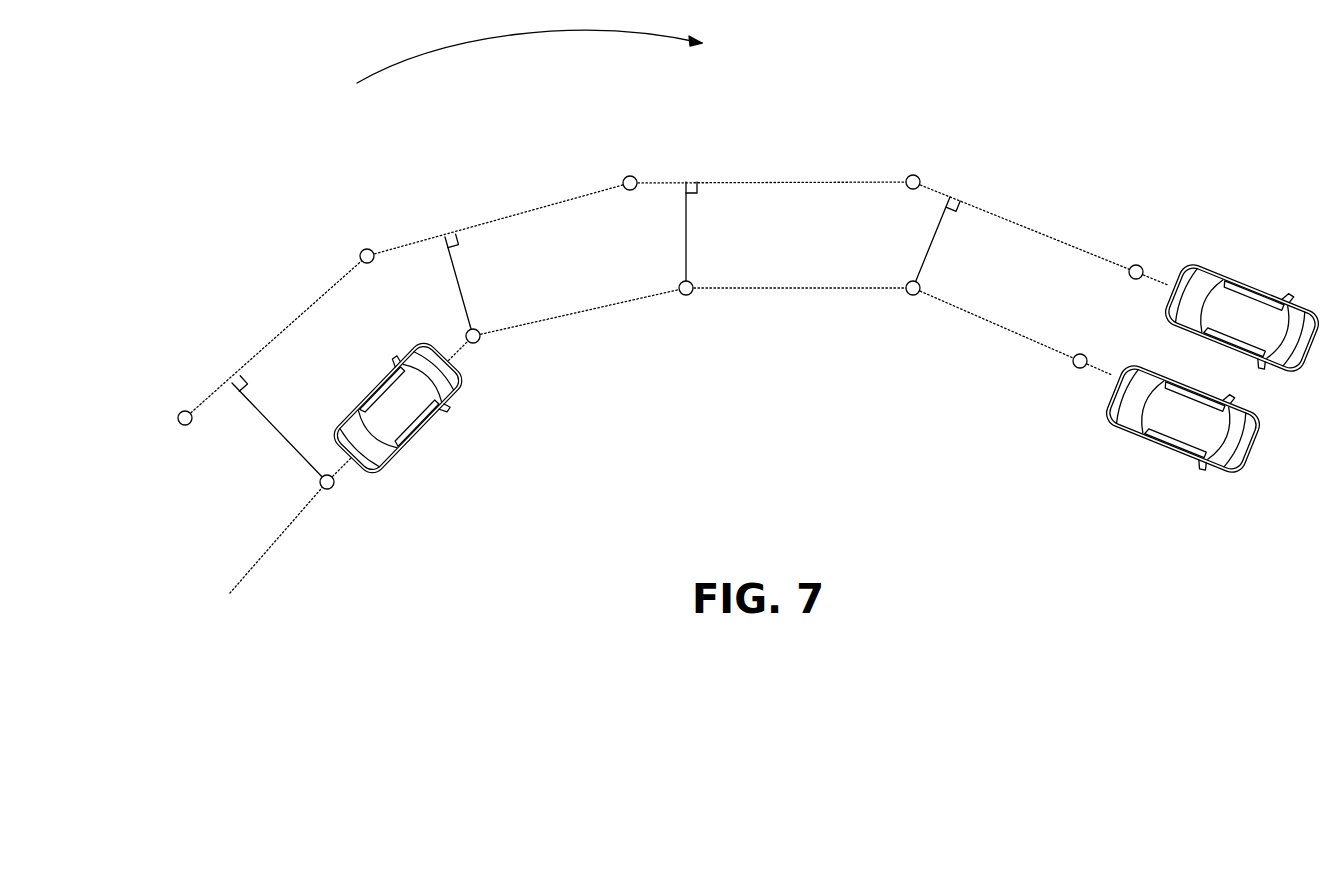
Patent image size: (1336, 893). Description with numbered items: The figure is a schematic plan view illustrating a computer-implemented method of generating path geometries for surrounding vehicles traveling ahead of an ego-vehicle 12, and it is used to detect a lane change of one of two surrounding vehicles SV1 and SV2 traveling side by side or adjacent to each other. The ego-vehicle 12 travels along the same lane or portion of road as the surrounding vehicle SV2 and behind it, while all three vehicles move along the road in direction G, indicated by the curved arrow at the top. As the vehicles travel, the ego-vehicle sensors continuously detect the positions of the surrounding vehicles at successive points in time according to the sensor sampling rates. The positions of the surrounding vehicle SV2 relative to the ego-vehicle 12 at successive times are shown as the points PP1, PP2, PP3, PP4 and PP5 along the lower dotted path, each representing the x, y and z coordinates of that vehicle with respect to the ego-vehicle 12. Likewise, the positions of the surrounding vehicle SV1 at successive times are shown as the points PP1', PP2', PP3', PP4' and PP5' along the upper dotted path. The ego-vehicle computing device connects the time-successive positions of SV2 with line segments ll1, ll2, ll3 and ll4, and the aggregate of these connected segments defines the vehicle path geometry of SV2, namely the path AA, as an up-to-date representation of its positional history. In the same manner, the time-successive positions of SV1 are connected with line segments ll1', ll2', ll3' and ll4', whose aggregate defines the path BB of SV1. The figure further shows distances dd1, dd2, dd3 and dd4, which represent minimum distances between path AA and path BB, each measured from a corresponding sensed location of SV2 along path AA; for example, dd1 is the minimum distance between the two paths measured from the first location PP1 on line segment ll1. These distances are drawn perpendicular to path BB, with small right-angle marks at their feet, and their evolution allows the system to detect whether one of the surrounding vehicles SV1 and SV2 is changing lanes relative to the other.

The direction of travel G is at (529, 43).
The ego-vehicle 12 is at (405, 427).
The surrounding vehicle SV1 is at (1254, 325).
The surrounding vehicle SV2 is at (1191, 421).
The vehicle position PP1 is at (351, 527).
The vehicle position PP2 is at (498, 385).
The vehicle position PP3 is at (707, 337).
The vehicle position PP4 is at (888, 357).
The vehicle position PP5 is at (1058, 416).
The vehicle position PP1' is at (131, 374).
The vehicle position PP2' is at (289, 225).
The vehicle position PP3' is at (584, 144).
The vehicle position PP4' is at (937, 125).
The vehicle position PP5' is at (1127, 206).
The line segment ll1 is at (351, 464).
The line segment ll2 is at (579, 351).
The line segment ll3 is at (799, 332).
The line segment ll4 is at (996, 357).
The line segment ll1' is at (276, 337).
The line segment ll2' is at (498, 195).
The line segment ll3' is at (771, 132).
The line segment ll4' is at (1024, 220).
The minimum distance dd1 is at (267, 425).
The minimum distance dd2 is at (450, 267).
The minimum distance dd3 is at (687, 222).
The minimum distance dd4 is at (937, 232).
The vehicle path AA is at (1025, 337).
The vehicle path BB is at (1042, 232).